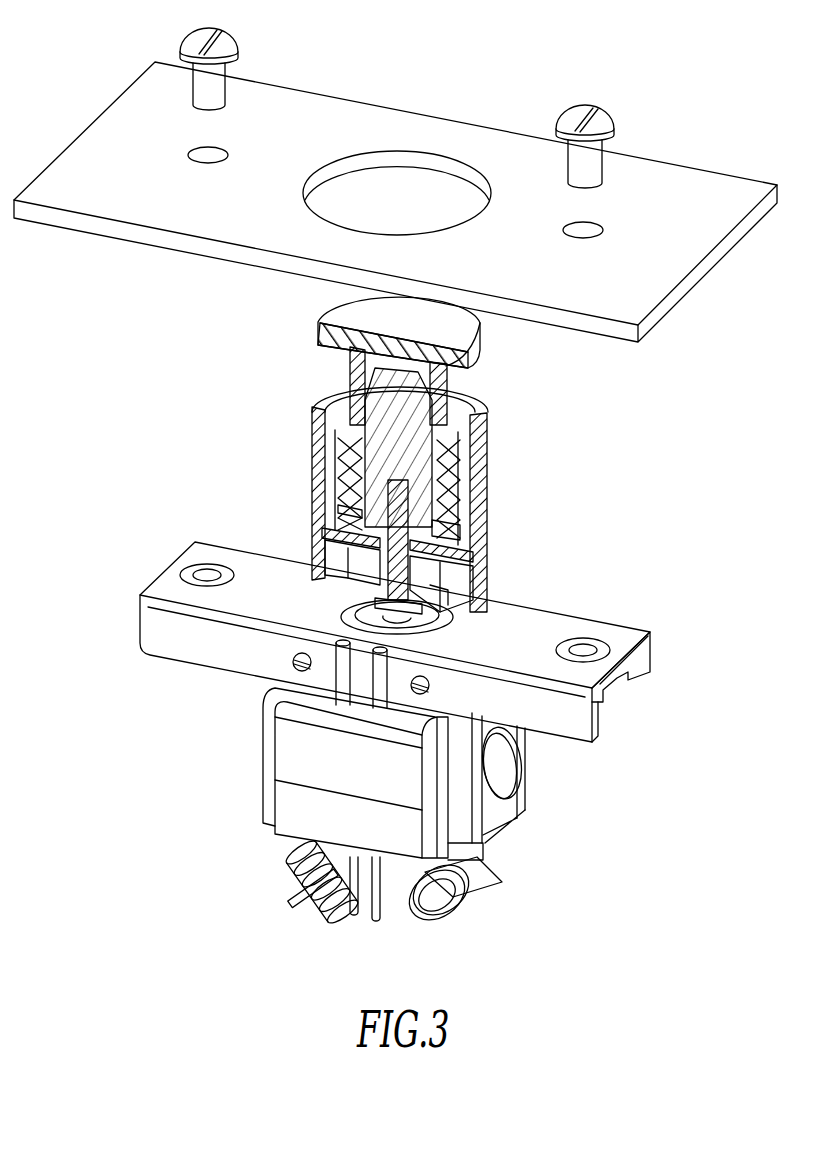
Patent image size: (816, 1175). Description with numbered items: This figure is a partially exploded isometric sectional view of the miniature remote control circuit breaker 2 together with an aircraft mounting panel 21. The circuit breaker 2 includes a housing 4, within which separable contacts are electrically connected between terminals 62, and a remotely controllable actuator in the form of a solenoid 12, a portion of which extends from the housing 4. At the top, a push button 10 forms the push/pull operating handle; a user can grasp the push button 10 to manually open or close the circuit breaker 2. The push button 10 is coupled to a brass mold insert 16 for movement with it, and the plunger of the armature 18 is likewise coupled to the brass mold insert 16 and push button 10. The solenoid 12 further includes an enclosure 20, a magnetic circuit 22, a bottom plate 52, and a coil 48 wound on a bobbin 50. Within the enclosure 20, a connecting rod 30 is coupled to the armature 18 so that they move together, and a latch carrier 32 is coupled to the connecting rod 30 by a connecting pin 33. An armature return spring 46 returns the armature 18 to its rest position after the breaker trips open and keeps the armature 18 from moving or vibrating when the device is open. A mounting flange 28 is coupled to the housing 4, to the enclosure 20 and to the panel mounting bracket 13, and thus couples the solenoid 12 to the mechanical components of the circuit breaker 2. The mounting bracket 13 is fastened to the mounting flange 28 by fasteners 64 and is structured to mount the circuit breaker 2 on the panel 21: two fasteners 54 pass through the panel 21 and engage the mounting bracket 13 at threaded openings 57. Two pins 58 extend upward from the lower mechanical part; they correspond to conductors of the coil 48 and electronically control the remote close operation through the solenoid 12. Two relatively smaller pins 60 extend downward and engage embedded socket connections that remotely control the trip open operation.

The miniature remote control circuit breaker 2 is at (441, 57).
The housing 4 is at (460, 818).
The push button 10 is at (340, 316).
The solenoid 12 is at (297, 424).
The panel mounting bracket 13 is at (403, 636).
The brass mold insert 16 is at (448, 388).
The armature 18 is at (420, 428).
The enclosure 20 is at (379, 492).
The panel 21 is at (705, 185).
The magnetic circuit 22 is at (330, 460).
The mounting flange 28 is at (340, 556).
The connecting rod 30 is at (355, 510).
The latch carrier 32 is at (345, 612).
The connecting pin 33 is at (440, 530).
The armature return spring 46 is at (452, 590).
The coil 48 is at (345, 480).
The bobbin 50 is at (470, 562).
The bottom plate 52 is at (345, 537).
The fasteners 54 is at (205, 40).
The threaded openings 57 is at (200, 577).
The pins 58 is at (378, 709).
The pins 60 is at (378, 915).
The terminals 62 is at (312, 905).
The fasteners 64 is at (292, 661).